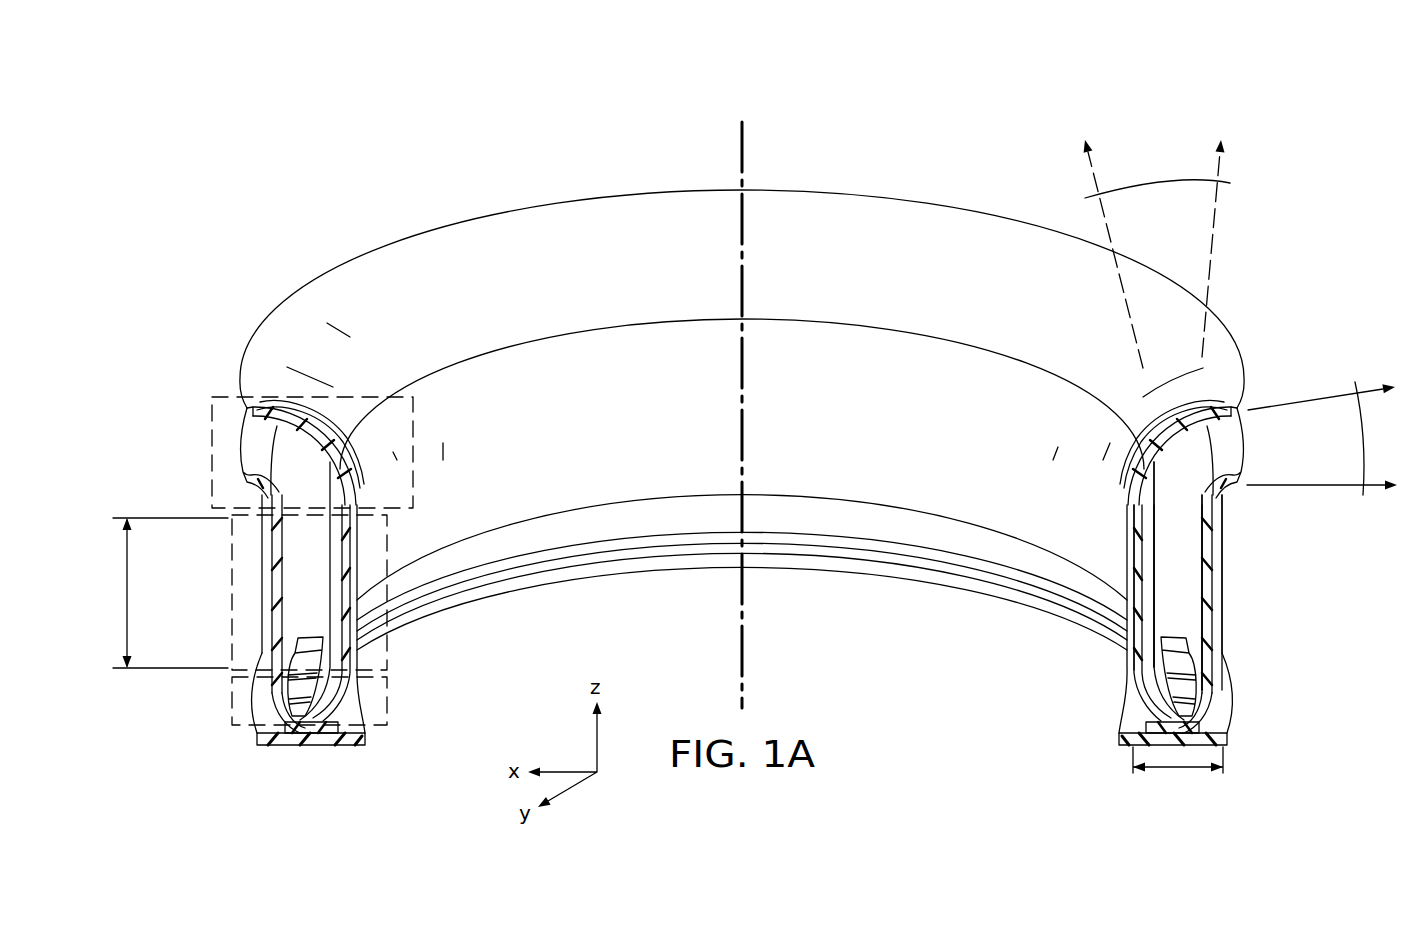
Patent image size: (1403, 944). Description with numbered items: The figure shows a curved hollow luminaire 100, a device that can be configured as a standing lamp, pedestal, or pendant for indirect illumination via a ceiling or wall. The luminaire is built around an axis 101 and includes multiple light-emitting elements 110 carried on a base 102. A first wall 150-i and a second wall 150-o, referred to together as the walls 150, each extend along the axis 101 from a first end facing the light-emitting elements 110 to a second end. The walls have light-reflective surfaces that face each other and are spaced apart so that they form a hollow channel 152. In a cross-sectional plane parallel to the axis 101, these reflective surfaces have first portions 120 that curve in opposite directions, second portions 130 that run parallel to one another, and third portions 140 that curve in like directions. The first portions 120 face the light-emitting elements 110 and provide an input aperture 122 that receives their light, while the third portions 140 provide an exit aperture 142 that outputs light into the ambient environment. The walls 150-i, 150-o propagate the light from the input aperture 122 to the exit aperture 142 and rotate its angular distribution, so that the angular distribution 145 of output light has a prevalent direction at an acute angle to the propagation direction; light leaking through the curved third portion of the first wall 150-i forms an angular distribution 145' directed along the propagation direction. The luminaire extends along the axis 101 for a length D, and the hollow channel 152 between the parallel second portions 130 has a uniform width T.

The hollow luminaire 100 is at (444, 126).
The axis 101 is at (745, 146).
The base 102 is at (347, 745).
The light-emitting elements 110 is at (1170, 690).
The first portions 120 is at (222, 729).
The input aperture 122 is at (310, 722).
The second portions 130 is at (223, 612).
The third portions 140 is at (203, 428).
The exit aperture 142 is at (243, 455).
The angular distribution of output light 145 is at (1322, 411).
The angular distribution of leaked light 145' is at (1203, 244).
The walls 150 is at (1333, 595).
The second wall 150-o is at (1213, 587).
The first wall 150-i is at (1213, 630).
The hollow channel 152 is at (1192, 565).
The length D is at (165, 593).
The width of the hollow channel T is at (1178, 771).